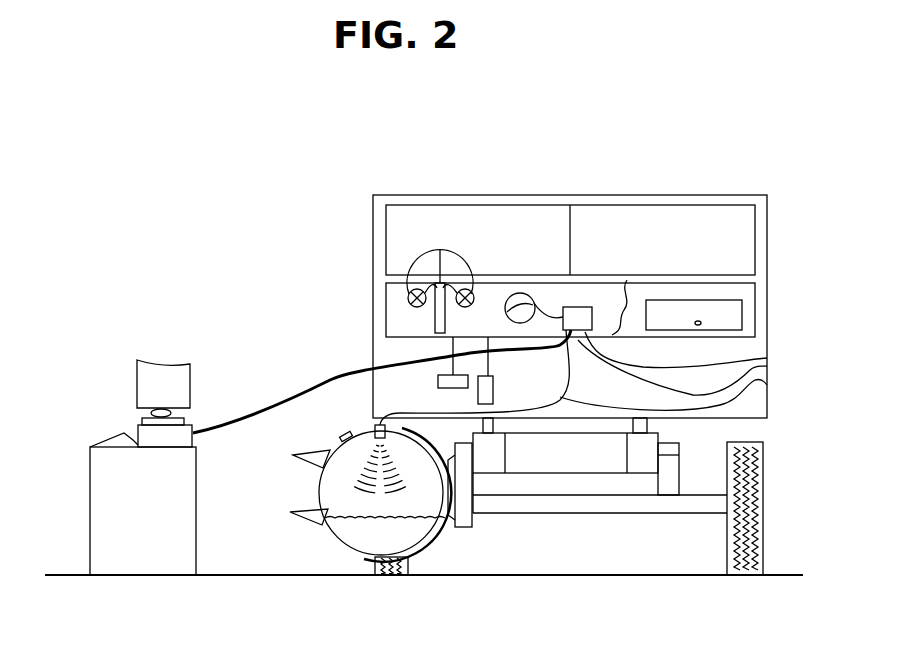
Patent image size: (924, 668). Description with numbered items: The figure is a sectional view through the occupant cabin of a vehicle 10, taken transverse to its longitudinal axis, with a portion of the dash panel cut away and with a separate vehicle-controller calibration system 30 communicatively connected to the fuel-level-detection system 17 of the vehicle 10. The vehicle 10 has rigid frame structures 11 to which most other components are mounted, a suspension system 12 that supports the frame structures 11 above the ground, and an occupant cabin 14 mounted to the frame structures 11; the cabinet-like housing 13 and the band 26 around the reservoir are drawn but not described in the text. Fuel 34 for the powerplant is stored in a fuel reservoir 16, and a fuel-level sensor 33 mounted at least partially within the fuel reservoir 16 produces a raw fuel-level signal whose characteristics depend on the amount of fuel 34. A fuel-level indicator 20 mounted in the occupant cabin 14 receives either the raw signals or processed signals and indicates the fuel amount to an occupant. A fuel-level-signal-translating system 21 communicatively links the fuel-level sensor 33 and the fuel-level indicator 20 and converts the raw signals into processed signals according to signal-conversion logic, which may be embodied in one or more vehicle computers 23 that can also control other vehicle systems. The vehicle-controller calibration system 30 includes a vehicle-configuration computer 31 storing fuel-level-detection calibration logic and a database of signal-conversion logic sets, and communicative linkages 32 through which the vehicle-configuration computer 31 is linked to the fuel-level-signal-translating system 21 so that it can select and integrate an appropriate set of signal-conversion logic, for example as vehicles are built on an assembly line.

The vehicle 10 is at (784, 300).
The frame structures 11 is at (592, 453).
The suspension system 12 is at (670, 478).
The control panel 13 is at (713, 196).
The occupant cabin 14 is at (767, 195).
The fuel reservoir 16 is at (328, 543).
The fuel-level-detection system 17 is at (533, 298).
The fuel-level indicator 20 is at (513, 293).
The fuel-level-signal-translating system 21 is at (563, 307).
The computer 23 is at (594, 307).
The tank collar 26 is at (427, 538).
The vehicle-controller calibration system 30 is at (130, 420).
The vehicle-configuration computer 31 is at (188, 374).
The communicative linkages 32 is at (268, 402).
The fuel-level sensor 33 is at (378, 427).
The fuel 34 is at (363, 537).